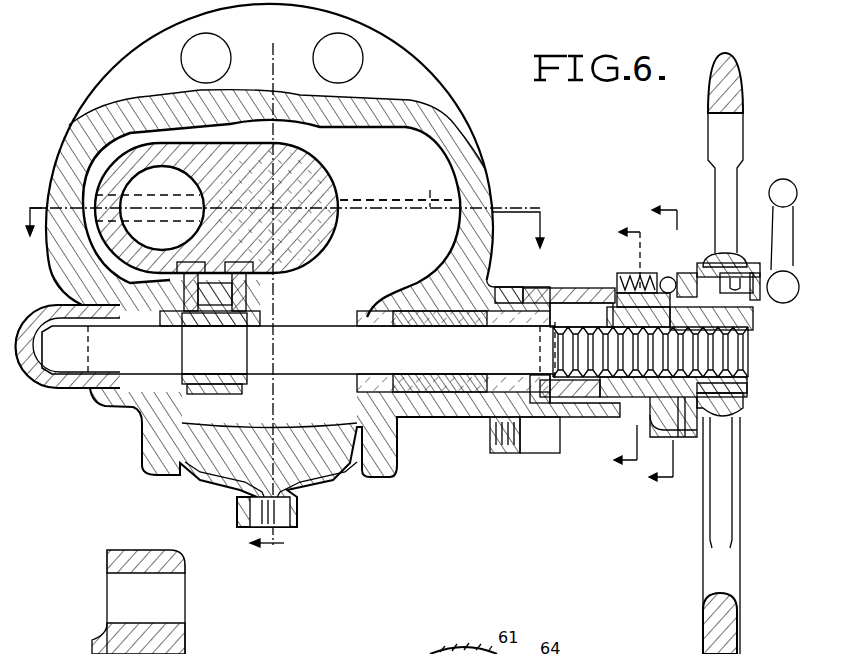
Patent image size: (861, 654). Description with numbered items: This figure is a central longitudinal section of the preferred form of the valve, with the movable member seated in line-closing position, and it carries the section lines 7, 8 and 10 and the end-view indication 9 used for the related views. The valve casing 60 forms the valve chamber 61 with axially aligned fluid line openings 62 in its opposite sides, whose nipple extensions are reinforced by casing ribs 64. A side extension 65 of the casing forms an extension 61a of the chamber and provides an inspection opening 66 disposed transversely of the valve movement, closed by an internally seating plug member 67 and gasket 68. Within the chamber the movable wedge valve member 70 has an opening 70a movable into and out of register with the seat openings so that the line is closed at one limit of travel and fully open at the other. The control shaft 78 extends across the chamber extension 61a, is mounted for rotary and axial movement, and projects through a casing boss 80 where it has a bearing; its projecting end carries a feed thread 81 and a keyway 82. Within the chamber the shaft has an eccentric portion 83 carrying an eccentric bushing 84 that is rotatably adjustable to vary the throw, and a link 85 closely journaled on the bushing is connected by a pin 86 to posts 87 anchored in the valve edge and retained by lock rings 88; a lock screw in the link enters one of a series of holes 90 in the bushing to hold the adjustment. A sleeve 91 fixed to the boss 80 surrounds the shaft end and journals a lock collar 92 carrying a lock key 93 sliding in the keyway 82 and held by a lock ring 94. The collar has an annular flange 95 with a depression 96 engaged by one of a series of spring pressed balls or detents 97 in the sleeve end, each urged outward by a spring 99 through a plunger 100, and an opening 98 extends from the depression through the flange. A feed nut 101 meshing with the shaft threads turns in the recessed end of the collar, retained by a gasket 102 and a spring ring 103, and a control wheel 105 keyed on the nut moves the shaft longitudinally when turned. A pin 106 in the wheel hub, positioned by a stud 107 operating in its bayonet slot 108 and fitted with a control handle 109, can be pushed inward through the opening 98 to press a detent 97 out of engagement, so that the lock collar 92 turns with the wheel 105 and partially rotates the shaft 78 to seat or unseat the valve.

The section line 7- 7 is at (282, 235).
The section line 8- 8 is at (267, 299).
The outer end view 9 is at (671, 342).
The section line 10- 10 is at (641, 346).
The valve casing 60 is at (172, 100).
The valve chamber 61 is at (397, 224).
The extension of the valve chamber 61a is at (431, 356).
The fluid line openings 62 is at (326, 176).
The casing ribs 64 is at (422, 198).
The side extension 65 is at (395, 452).
The inspection opening 66 is at (370, 478).
The plug member 67 is at (318, 432).
The gasket 68 is at (196, 425).
The wedge valve member 70 is at (232, 150).
The valve member opening 70a is at (149, 208).
The control shaft 78 is at (332, 334).
The casing boss 80 is at (465, 417).
The feed thread 81 is at (590, 327).
The keyway 82 is at (552, 383).
The eccentric portion 83 is at (214, 350).
The eccentric bushing 84 is at (247, 380).
The link 85 is at (212, 394).
The pin 86 is at (260, 312).
The posts 87 is at (176, 267).
The lock rings 88 is at (262, 278).
The holes 90 is at (212, 360).
The sleeve 91 is at (578, 289).
The lock collar 92 is at (620, 292).
The lock key 93 is at (650, 415).
The lock ring 94 is at (604, 300).
The annular flange 95 is at (673, 277).
The depression 96 is at (682, 272).
The spring pressed balls or detents 97 is at (638, 317).
The opening 98 is at (700, 263).
The spring 99 is at (645, 276).
The plunger 100 is at (622, 236).
The feed nut 101 is at (753, 322).
The gasket 102 is at (689, 427).
The spring ring 103 is at (708, 418).
The control wheel 105 is at (732, 574).
The pin 106 is at (722, 253).
The stud 107 is at (758, 273).
The bayonet slot 108 is at (772, 262).
The control handle 109 is at (805, 193).